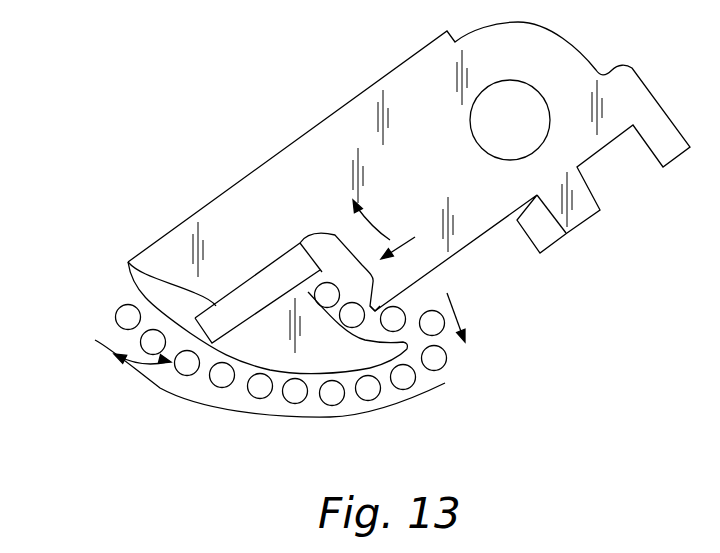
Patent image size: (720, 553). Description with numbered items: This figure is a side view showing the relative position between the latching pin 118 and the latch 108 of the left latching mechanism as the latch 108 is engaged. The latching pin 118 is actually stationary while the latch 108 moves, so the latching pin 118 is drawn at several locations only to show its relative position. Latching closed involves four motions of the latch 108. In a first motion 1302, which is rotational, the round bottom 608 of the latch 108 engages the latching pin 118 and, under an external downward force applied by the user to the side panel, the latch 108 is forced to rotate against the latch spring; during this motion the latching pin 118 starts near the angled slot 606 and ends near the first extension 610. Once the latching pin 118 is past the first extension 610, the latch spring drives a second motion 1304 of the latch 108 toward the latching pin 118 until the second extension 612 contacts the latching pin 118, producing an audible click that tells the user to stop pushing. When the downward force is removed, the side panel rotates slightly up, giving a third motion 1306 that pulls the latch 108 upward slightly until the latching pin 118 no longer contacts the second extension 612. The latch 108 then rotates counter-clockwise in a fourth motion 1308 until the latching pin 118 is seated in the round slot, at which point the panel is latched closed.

The latch 108 is at (222, 205).
The angled slot 606 is at (137, 262).
The latching pin 118 is at (113, 312).
The round bottom 608 is at (114, 352).
The second extension 612 is at (376, 307).
The first extension 610 is at (409, 351).
The first motion 1302 is at (425, 395).
The second motion 1304 is at (453, 315).
The third motion 1306 is at (407, 238).
The fourth motion 1308 is at (350, 226).